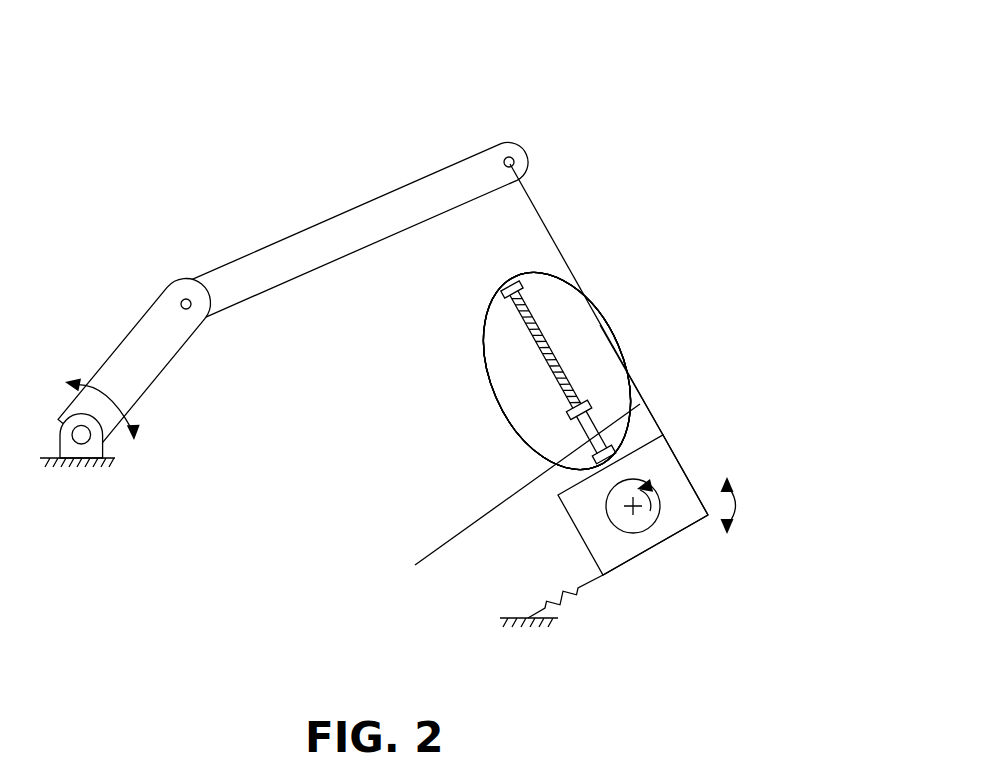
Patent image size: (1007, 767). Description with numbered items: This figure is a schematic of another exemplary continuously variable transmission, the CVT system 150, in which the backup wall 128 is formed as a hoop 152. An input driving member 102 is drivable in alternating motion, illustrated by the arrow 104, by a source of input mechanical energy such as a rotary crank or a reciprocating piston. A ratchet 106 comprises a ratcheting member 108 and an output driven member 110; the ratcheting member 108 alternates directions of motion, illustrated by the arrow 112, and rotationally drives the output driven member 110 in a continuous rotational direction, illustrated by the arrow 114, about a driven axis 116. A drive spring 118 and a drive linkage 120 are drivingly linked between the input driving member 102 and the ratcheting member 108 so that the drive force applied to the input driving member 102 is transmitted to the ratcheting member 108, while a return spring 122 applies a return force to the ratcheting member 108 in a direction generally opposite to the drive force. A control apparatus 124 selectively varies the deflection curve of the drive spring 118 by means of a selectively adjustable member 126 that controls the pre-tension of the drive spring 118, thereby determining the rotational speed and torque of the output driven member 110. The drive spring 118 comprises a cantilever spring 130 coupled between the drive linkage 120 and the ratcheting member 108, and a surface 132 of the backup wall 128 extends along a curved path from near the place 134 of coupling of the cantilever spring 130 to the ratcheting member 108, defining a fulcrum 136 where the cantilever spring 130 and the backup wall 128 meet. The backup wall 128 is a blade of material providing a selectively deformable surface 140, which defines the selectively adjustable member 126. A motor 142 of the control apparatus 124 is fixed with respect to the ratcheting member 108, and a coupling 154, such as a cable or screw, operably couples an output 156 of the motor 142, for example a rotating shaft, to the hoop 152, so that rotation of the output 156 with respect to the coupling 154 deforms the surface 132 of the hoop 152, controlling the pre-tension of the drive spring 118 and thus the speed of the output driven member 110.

The input driving member 102 is at (143, 333).
The arrow 104 is at (136, 421).
The ratchet 106 is at (657, 551).
The ratcheting member 108 is at (567, 513).
The output driven member 110 is at (633, 533).
The arrow 112 is at (738, 510).
The arrow 114 is at (652, 488).
The driven axis 116 is at (612, 524).
The drive spring 118 is at (587, 297).
The drive linkage 120 is at (348, 211).
The return spring 122 is at (578, 590).
The control apparatus 124 is at (500, 401).
The selectively adjustable member 126 is at (477, 375).
The backup wall 128 is at (544, 277).
The cantilever spring 130 is at (545, 227).
The surface 132 is at (531, 276).
The place of coupling 134 is at (665, 432).
The fulcrum 136 is at (612, 330).
The selectively deformable surface 140 is at (636, 403).
The motor 142 is at (415, 565).
The CVT system 150 is at (553, 64).
The hoop 152 is at (481, 322).
The coupling 154 is at (487, 289).
The output 156 is at (557, 375).